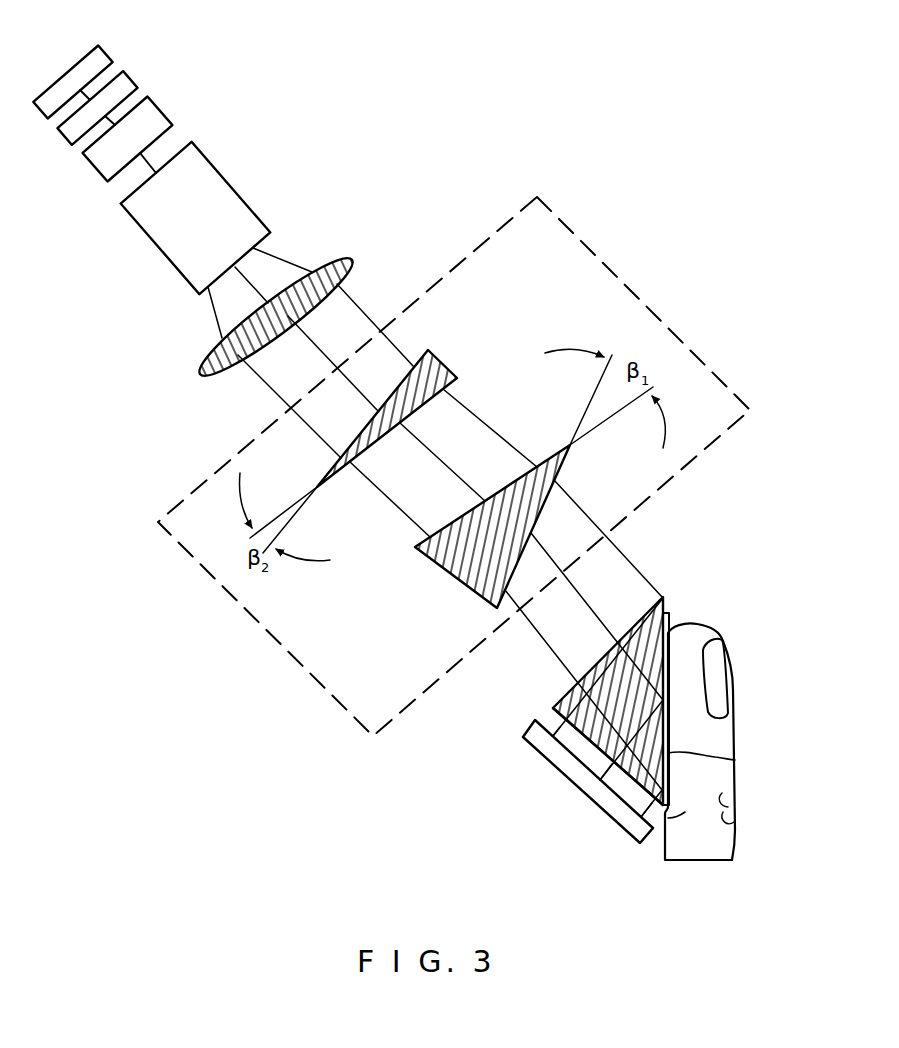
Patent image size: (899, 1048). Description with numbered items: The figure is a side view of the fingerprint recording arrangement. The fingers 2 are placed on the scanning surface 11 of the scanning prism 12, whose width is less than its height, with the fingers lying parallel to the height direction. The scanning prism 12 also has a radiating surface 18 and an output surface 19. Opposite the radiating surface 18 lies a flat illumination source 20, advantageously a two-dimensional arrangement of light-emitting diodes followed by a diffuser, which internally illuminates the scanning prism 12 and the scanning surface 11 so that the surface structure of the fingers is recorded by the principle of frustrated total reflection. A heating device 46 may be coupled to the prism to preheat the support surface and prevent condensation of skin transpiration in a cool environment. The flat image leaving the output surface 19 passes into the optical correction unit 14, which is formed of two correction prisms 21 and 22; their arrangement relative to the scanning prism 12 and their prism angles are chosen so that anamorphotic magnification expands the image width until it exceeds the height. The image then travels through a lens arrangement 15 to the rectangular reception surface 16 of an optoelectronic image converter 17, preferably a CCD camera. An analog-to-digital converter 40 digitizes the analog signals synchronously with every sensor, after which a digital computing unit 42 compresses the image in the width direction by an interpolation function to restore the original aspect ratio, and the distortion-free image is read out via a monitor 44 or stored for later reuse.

The fingers 2 is at (690, 848).
The scanning surface 11 is at (706, 765).
The scanning prism 12 is at (667, 599).
The optical correction unit 14 is at (178, 522).
The lens arrangement 15 is at (348, 258).
The reception surface 16 is at (268, 242).
The optoelectronic image converter 17 is at (145, 217).
The radiating surface 18 is at (577, 748).
The output surface 19 is at (556, 704).
The flat illumination source 20 is at (603, 812).
The correction prism 21 is at (422, 560).
The correction prism 22 is at (450, 376).
The analog-to-digital converter 40 is at (168, 115).
The digital computing unit 42 is at (137, 88).
The monitor 44 is at (113, 62).
The heating device 46 is at (670, 617).